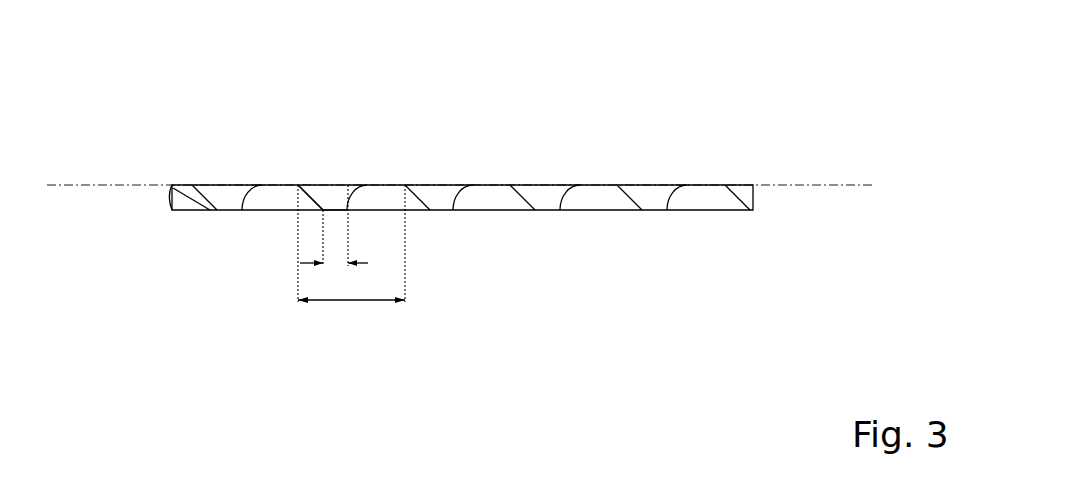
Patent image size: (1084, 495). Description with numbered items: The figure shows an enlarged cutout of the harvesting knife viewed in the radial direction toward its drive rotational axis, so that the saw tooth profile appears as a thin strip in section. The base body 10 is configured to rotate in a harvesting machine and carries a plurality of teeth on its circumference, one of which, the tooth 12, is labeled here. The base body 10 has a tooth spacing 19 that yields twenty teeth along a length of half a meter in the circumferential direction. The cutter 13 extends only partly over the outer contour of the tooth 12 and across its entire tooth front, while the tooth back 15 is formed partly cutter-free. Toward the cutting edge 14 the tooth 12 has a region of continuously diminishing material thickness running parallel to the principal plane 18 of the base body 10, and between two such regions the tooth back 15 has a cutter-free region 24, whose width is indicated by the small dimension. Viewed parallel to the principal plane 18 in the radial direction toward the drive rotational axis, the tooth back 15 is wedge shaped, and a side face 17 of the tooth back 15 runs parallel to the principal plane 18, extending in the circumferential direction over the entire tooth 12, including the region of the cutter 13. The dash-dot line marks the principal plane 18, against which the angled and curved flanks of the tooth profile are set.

The base body 10 is at (755, 186).
The tooth 12 is at (318, 185).
The cutter 13 is at (300, 193).
The cutting edge 14 is at (312, 190).
The tooth back 15 is at (343, 204).
The side face 17 is at (333, 184).
The principal plane 18 is at (108, 185).
The tooth spacing 19 is at (372, 302).
The cutter-free region 24 is at (337, 265).